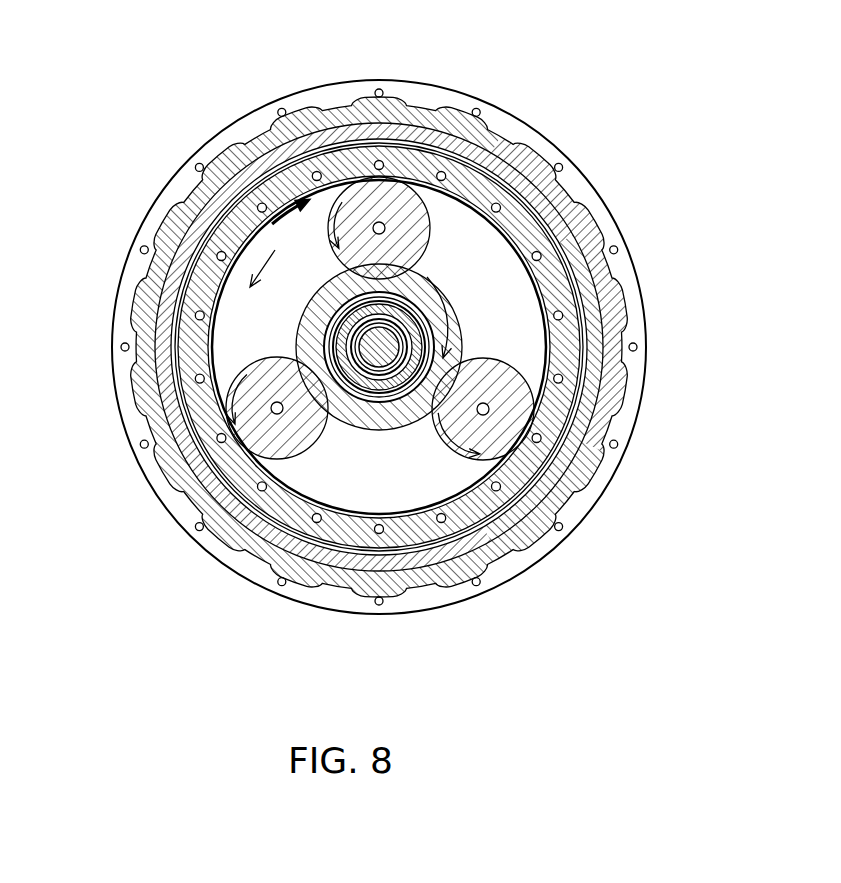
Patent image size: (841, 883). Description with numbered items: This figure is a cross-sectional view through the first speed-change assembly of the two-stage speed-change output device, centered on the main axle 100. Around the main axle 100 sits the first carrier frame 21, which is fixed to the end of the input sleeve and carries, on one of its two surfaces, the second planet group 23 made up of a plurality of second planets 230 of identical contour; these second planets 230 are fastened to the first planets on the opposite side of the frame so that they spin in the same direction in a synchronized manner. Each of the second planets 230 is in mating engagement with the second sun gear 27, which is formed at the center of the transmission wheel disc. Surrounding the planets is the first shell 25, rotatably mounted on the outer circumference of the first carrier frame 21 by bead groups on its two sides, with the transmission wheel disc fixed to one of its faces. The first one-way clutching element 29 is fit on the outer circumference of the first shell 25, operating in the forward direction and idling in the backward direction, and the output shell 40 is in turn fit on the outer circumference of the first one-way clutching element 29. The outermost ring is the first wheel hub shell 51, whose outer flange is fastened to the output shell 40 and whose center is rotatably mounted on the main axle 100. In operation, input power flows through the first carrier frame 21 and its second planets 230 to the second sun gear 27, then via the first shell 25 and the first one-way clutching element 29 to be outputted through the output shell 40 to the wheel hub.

The first carrier frame 21 is at (468, 223).
The second planet group 23 is at (292, 203).
The second planets 230 is at (345, 187).
The first shell 25 is at (200, 278).
The second sun gear 27 is at (228, 198).
The first one-way clutching element 29 is at (583, 310).
The output shell 40 is at (550, 217).
The first wheel hub shell 51 is at (422, 120).
The main axle 100 is at (383, 346).